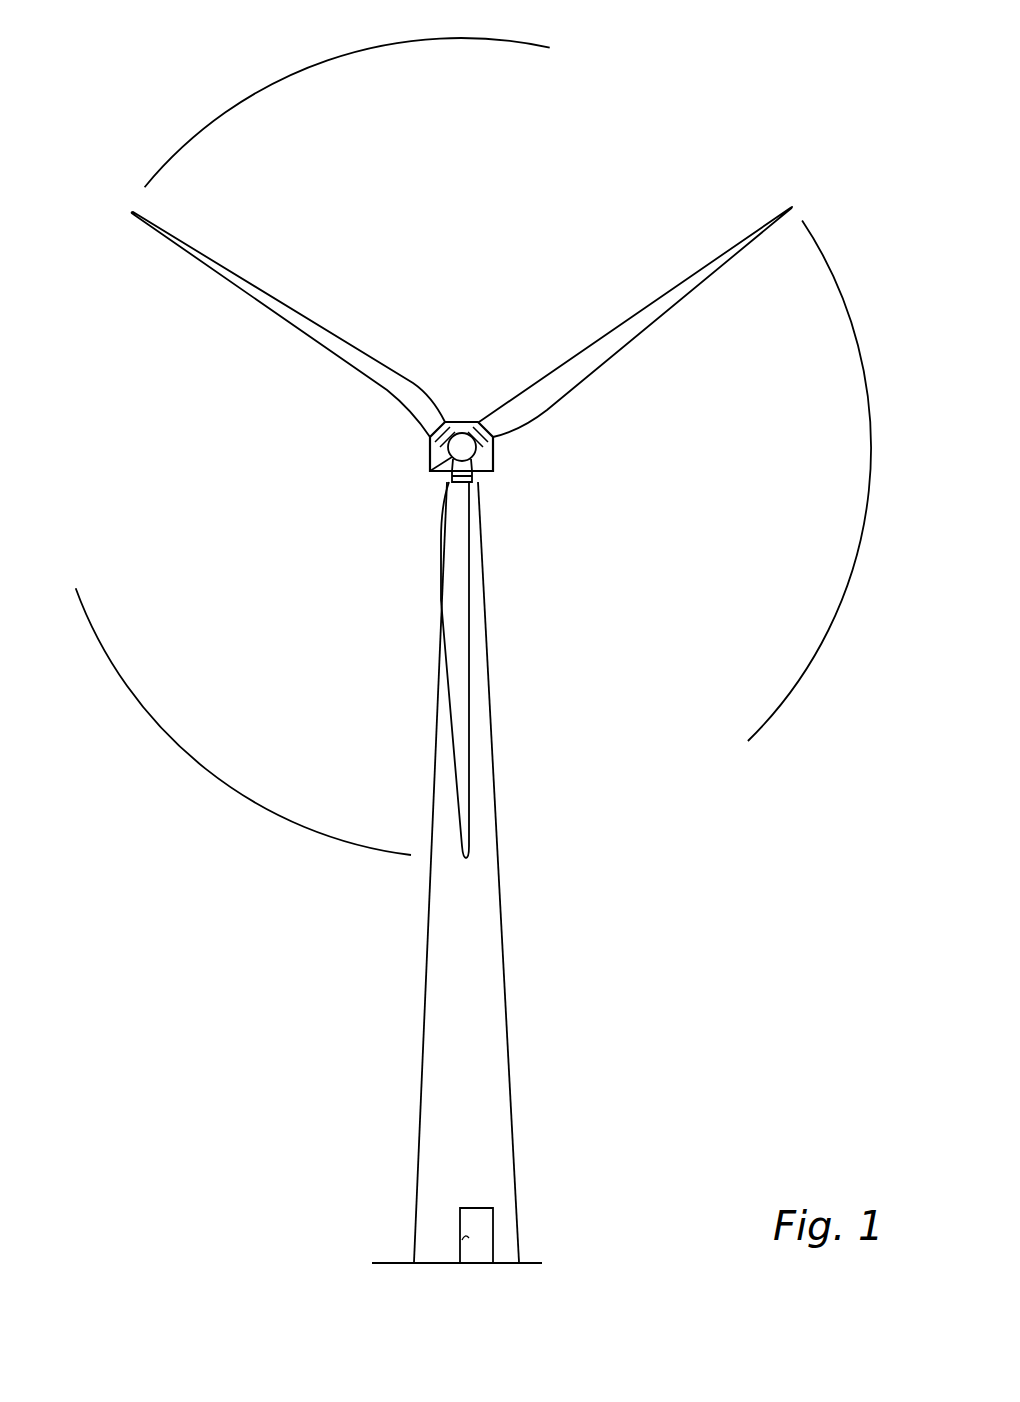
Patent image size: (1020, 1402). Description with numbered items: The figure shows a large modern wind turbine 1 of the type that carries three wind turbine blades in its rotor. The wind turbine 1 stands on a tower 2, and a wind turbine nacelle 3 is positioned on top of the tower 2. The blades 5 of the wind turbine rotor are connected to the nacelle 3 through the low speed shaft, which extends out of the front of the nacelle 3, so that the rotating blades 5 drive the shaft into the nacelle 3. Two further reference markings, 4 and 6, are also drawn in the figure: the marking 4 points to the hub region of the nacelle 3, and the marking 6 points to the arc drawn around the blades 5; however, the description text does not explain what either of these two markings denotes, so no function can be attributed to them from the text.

The wind turbine 1 is at (473, 650).
The tower 2 is at (488, 970).
The wind turbine nacelle 3 is at (494, 468).
The nacelle 4 is at (430, 468).
The blades 5 is at (470, 782).
The rotor sweep area 6 is at (211, 811).